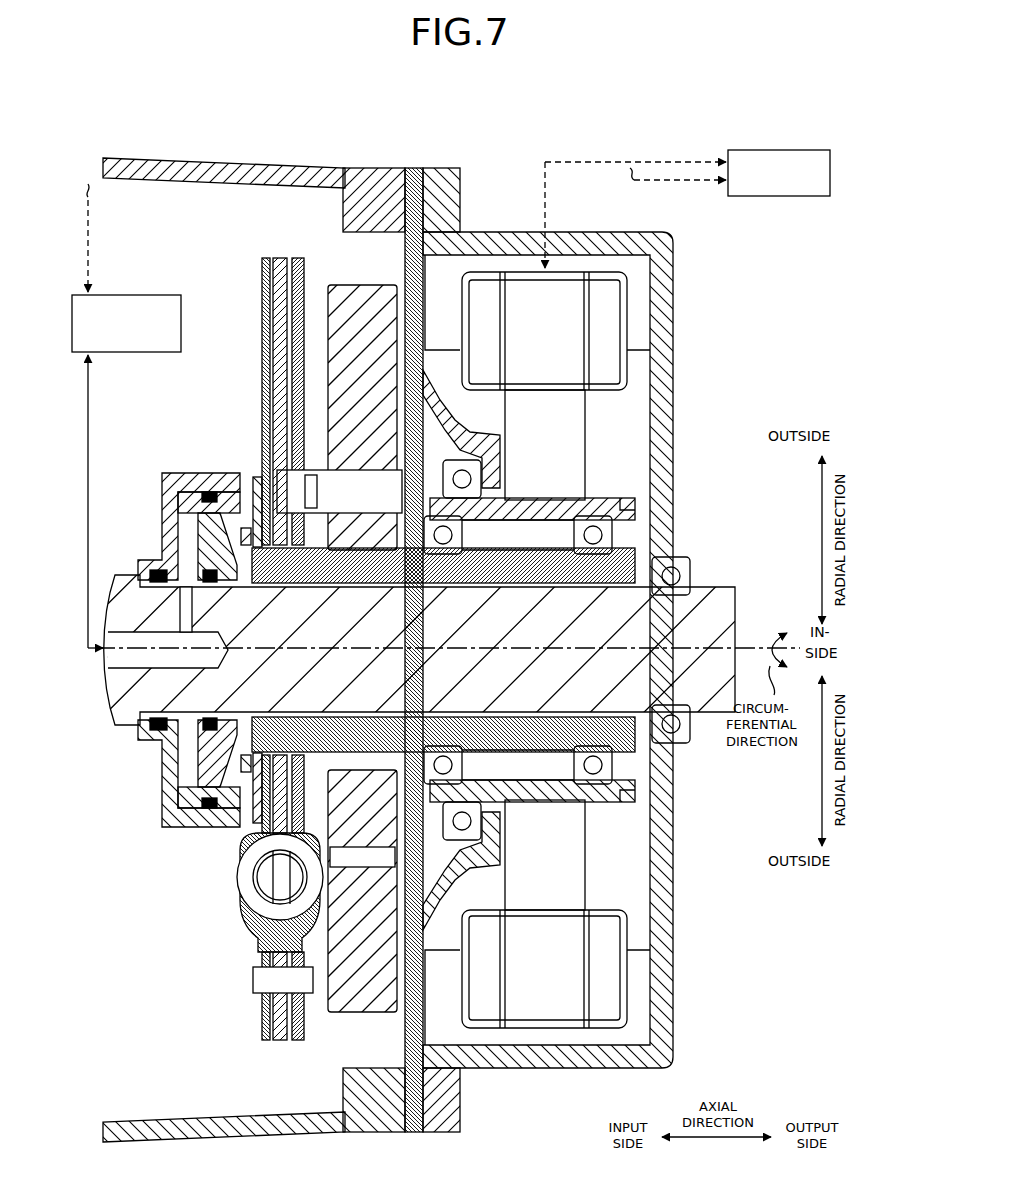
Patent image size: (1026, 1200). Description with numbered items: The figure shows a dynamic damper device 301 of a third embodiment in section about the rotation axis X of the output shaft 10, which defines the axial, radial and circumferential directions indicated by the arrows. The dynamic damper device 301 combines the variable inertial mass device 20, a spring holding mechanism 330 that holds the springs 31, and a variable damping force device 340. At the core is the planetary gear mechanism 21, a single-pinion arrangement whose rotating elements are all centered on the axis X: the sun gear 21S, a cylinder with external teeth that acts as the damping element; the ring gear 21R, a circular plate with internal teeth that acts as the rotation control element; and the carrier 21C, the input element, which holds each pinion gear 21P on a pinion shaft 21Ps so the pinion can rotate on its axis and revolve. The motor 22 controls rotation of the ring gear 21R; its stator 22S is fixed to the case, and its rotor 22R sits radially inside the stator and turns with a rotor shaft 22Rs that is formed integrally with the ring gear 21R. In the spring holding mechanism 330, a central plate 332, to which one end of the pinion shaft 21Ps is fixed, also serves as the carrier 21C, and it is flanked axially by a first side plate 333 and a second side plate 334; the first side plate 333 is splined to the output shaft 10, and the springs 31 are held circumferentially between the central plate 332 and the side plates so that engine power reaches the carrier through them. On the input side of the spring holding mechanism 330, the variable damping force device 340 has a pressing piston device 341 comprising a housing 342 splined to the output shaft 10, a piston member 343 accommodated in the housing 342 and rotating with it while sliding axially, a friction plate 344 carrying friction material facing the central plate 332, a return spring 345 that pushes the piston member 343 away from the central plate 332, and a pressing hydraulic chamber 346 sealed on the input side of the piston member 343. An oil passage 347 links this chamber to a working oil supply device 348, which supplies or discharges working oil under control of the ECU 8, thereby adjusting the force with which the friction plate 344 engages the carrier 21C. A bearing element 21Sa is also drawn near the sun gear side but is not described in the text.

The dynamic damper device 301 is at (520, 131).
The ECU 8 is at (778, 150).
The output shaft 10 is at (447, 600).
The variable inertial mass device 20 is at (446, 270).
The planetary gear mechanism 21 is at (479, 647).
The ring gear 21R is at (357, 282).
The pinion gear 21P is at (362, 445).
The pinion shaft 21Ps is at (325, 490).
The sun gear 21S is at (622, 712).
The sleeve bearing 21Sa is at (593, 560).
The carrier 21C is at (253, 898).
The motor 22 is at (596, 606).
The stator 22S is at (545, 308).
The rotor 22R is at (545, 415).
The rotor shaft 22Rs is at (518, 508).
The spring 31 is at (252, 877).
The spring holding mechanism 330 is at (252, 665).
The central plate 332 is at (247, 979).
The first side plate 333 is at (262, 287).
The second side plate 334 is at (272, 326).
The variable damping force device 340 is at (180, 596).
The pressing piston device 341 is at (180, 616).
The housing 342 is at (178, 472).
The piston member 343 is at (198, 527).
The friction plate 344 is at (255, 478).
The return spring 345 is at (195, 522).
The pressing hydraulic chamber 346 is at (190, 547).
The oil passage 347 is at (178, 608).
The working oil supply device 348 is at (140, 293).
The rotation axis X is at (752, 642).